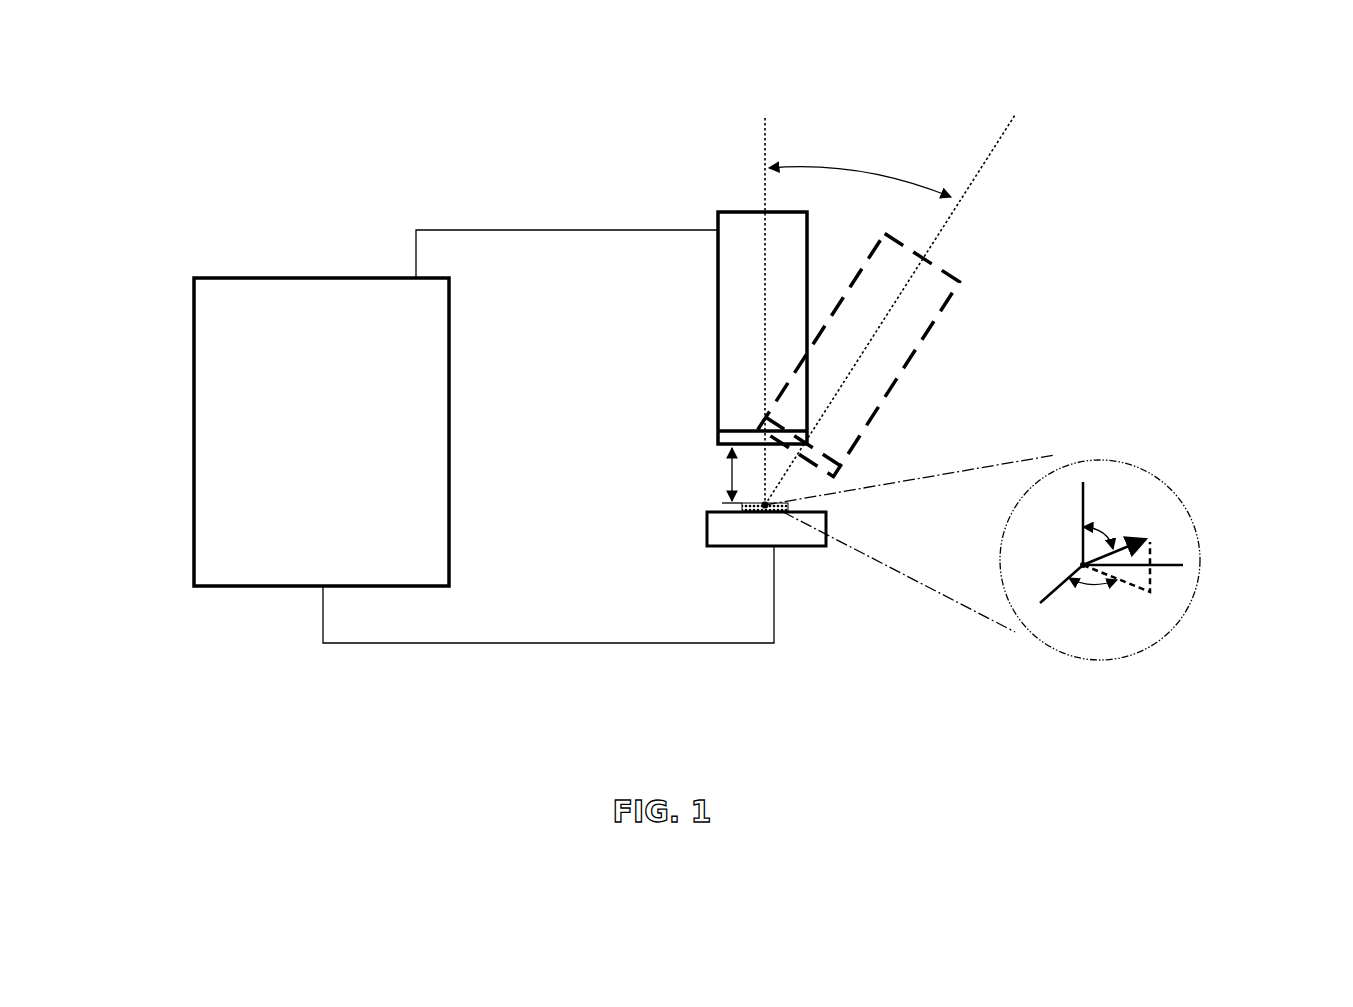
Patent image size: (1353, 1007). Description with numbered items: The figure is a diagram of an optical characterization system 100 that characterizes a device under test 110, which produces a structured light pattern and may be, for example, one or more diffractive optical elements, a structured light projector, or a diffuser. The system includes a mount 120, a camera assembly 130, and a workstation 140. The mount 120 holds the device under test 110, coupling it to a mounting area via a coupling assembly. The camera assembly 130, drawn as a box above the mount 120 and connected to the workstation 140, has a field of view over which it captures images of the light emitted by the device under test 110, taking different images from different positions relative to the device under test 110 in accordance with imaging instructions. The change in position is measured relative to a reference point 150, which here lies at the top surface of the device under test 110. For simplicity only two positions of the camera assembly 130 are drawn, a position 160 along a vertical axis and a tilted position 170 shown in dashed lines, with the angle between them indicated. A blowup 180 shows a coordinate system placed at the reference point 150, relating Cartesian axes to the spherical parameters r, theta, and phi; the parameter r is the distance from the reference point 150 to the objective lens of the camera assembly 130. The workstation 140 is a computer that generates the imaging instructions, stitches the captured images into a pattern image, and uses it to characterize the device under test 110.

The optical characterization system 100 is at (70, 89).
The device under test 110 is at (783, 511).
The mount 120 is at (717, 523).
The camera assembly 130 is at (747, 295).
The workstation 140 is at (302, 465).
The reference point 150 is at (767, 503).
The position 160 is at (765, 145).
The position 170 is at (993, 152).
The blowup 180 is at (1198, 538).